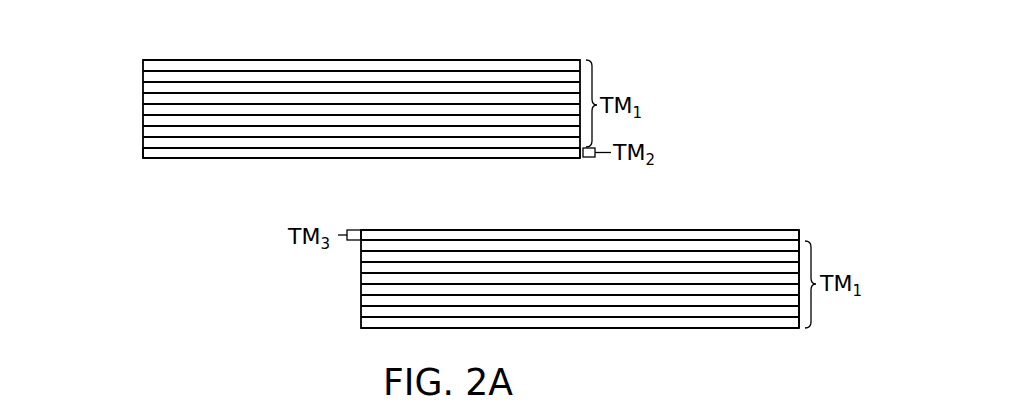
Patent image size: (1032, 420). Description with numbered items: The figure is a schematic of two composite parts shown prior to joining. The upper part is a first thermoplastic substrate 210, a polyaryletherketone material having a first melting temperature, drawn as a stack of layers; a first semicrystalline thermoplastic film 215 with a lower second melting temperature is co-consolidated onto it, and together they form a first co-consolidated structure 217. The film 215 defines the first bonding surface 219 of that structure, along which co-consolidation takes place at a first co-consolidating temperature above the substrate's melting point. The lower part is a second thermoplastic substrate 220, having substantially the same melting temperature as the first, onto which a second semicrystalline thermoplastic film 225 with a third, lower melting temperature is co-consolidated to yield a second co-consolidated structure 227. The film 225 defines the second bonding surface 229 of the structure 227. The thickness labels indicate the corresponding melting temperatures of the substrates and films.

The first thermoplastic substrate 210 is at (142, 114).
The first co-consolidated structure 217 is at (630, 80).
The first bonding surface 219 is at (145, 166).
The first semicrystalline thermoplastic film 215 is at (572, 162).
The second thermoplastic substrate 220 is at (360, 290).
The second bonding surface 229 is at (365, 222).
The second semicrystalline thermoplastic film 225 is at (800, 235).
The second co-consolidated structure 227 is at (828, 302).